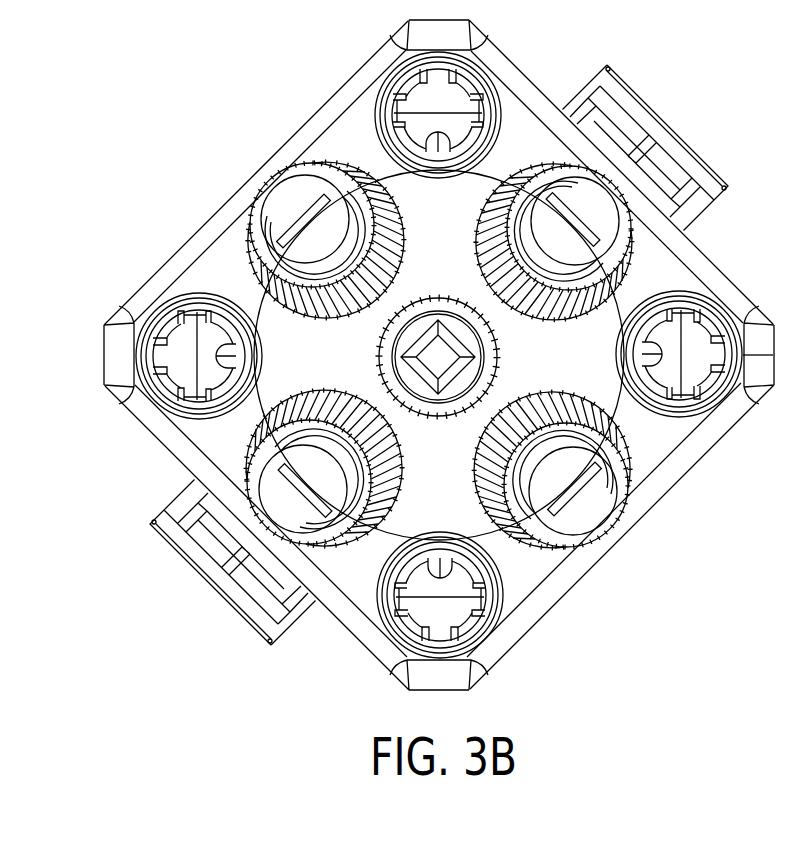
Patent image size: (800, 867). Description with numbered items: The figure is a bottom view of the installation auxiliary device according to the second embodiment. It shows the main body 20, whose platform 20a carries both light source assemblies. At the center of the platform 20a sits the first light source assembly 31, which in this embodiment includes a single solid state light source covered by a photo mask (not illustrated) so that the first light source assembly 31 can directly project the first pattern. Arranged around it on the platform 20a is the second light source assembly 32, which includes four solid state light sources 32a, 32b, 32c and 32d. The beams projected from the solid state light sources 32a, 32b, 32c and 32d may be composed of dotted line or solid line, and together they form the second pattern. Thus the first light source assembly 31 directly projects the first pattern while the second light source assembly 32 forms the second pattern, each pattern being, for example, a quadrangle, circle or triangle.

The main body 20 is at (368, 684).
The platform 20a is at (365, 577).
The first light source assembly 31 is at (440, 362).
The second light source assembly 32 is at (253, 5).
The solid state light source 32a is at (278, 210).
The solid state light source 32b is at (300, 462).
The solid state light source 32c is at (558, 468).
The solid state light source 32d is at (545, 213).